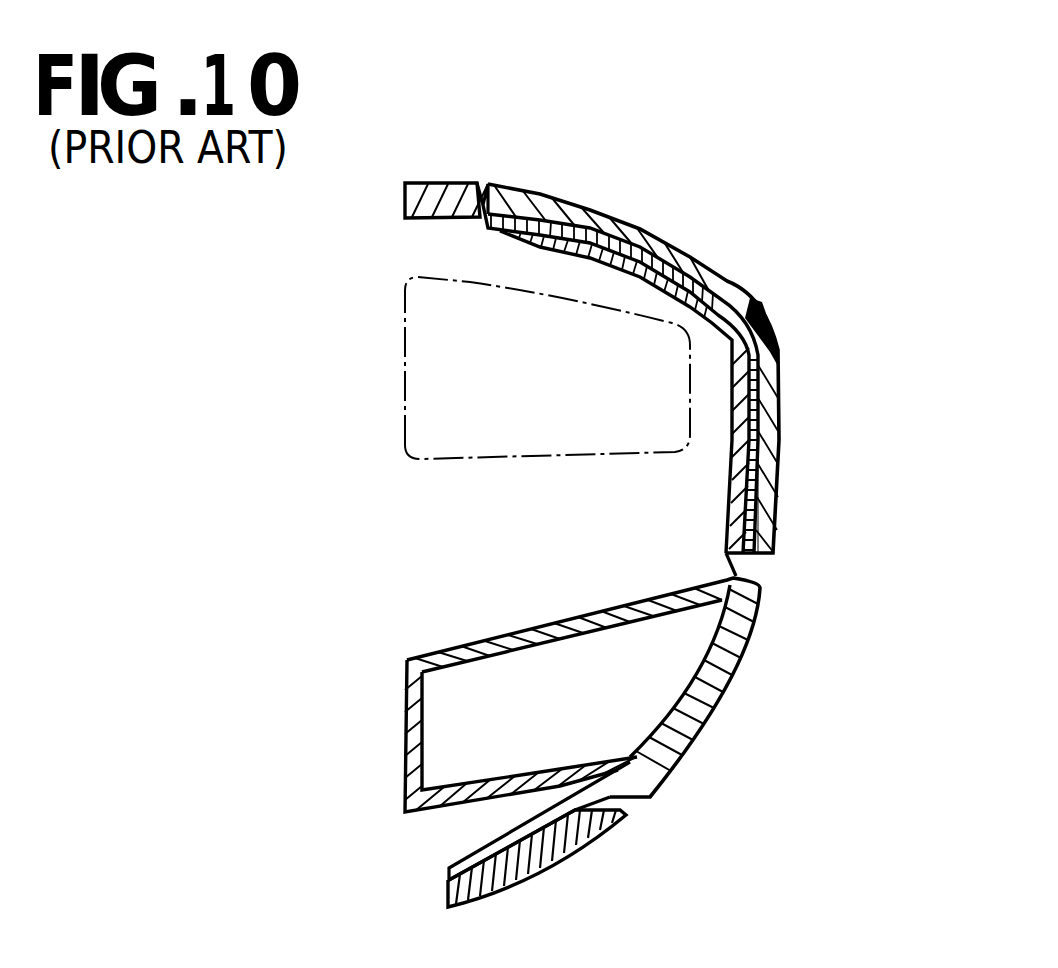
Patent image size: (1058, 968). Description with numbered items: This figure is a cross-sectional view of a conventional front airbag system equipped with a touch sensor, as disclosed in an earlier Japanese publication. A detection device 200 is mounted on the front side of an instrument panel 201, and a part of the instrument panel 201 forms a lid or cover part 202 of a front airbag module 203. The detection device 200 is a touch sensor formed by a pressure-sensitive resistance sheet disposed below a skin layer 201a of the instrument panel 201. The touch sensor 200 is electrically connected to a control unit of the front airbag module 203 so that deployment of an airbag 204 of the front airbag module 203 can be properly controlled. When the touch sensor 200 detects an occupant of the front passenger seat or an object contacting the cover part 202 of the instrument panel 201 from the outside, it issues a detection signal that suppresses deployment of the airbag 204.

The detection device 200 is at (728, 283).
The instrument panel 201 is at (457, 183).
The skin layer 201a is at (760, 503).
The cover part 202 is at (737, 462).
The front airbag module 203 is at (353, 417).
The airbag 204 is at (550, 293).